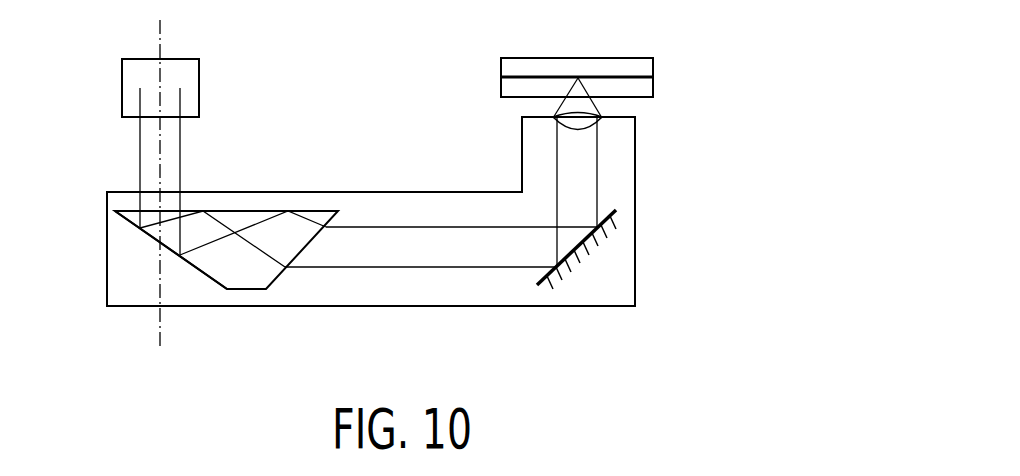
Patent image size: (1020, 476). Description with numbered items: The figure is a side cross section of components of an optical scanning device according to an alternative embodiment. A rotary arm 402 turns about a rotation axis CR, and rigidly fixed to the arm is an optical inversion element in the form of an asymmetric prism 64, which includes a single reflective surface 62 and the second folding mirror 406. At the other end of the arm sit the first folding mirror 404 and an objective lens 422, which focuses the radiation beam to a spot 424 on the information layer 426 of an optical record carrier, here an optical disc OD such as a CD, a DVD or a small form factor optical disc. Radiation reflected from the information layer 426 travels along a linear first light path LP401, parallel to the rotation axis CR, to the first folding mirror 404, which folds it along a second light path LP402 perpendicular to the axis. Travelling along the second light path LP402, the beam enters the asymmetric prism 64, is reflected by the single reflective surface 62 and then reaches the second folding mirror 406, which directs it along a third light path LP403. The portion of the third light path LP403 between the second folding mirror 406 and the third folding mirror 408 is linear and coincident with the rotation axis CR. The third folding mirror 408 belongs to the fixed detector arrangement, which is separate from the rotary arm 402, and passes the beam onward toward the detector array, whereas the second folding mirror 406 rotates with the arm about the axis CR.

The rotary arm 402 is at (636, 193).
The first folding mirror 404 is at (607, 238).
The second folding mirror 406 is at (145, 233).
The third folding mirror 408 is at (188, 70).
The single reflective surface 62 is at (240, 211).
The asymmetric prism 64 is at (248, 290).
The objective lens 422 is at (577, 124).
The spot 424 is at (578, 78).
The information layer 426 is at (642, 75).
The first light path LP401 is at (572, 165).
The second light path LP402 is at (448, 248).
The third light path LP403 is at (150, 149).
The rotation axis CR is at (160, 23).
The optical disc OD is at (630, 63).